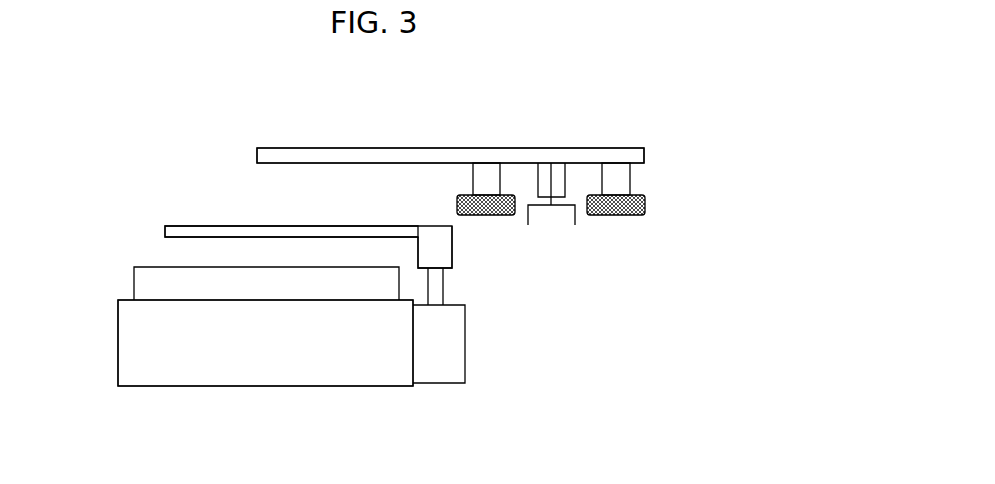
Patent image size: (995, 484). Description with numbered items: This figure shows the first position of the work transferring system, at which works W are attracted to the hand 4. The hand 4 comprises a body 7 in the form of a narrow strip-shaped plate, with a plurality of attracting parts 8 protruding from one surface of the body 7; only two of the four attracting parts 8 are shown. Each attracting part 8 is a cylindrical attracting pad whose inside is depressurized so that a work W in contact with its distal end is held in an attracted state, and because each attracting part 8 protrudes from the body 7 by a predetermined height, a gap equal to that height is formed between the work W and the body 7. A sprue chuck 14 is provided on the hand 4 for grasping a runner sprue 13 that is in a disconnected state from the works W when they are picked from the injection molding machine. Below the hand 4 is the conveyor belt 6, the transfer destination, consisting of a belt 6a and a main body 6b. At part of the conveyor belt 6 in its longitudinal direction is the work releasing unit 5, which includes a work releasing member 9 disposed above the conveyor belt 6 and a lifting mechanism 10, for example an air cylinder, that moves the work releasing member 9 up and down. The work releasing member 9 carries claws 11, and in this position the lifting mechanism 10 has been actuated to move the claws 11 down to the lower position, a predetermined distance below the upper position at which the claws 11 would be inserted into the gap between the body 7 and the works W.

The hand 4 is at (288, 146).
The body 7 is at (368, 148).
The attracting part 8 is at (473, 178).
The work W is at (457, 204).
The sprue chuck 14 is at (565, 178).
The runner sprue 13 is at (575, 226).
The work releasing unit 5 is at (230, 224).
The claw 11 is at (190, 226).
The work releasing member 9 is at (452, 247).
The conveyor belt 6 is at (116, 321).
The belt 6a is at (143, 267).
The main body 6b is at (118, 362).
The lifting mechanism 10 is at (465, 345).